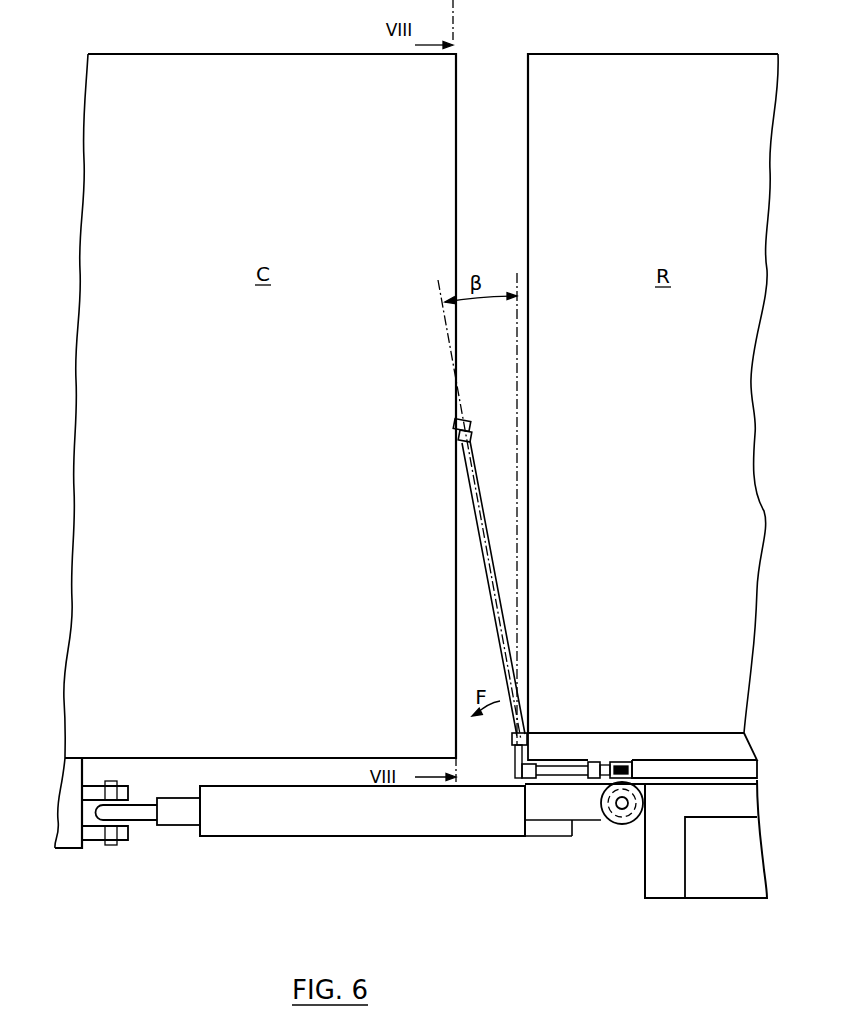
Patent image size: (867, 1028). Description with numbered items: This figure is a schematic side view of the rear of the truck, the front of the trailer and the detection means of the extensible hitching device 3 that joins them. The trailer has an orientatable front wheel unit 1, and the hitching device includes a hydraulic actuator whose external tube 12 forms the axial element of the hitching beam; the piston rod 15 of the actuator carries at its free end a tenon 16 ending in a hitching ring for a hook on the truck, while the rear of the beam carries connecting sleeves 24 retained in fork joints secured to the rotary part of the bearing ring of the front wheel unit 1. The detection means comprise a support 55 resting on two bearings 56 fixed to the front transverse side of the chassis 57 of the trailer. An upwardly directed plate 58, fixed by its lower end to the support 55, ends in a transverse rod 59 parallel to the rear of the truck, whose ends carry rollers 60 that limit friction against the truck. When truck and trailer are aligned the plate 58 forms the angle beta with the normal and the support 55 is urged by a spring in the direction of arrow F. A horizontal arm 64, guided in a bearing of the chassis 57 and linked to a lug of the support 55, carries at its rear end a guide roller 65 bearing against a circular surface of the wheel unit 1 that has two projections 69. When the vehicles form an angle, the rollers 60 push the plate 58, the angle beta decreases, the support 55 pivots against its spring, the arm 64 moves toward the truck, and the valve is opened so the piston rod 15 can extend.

The orientatable front wheel unit 1 is at (722, 800).
The extensible hitching device 3 is at (303, 840).
The external tube 12 is at (275, 808).
The piston rod 15 is at (190, 815).
The tenon 16 is at (148, 812).
The connecting sleeve 24 is at (598, 810).
The support 55 is at (511, 740).
The bearing 56 is at (535, 760).
The chassis 57 is at (672, 742).
The upwardly directed plate 58 is at (487, 572).
The transverse rod 59 is at (476, 438).
The roller 60 is at (470, 421).
The horizontal arm 64 is at (567, 770).
The guide roller 65 is at (633, 762).
The projection 69 is at (700, 773).